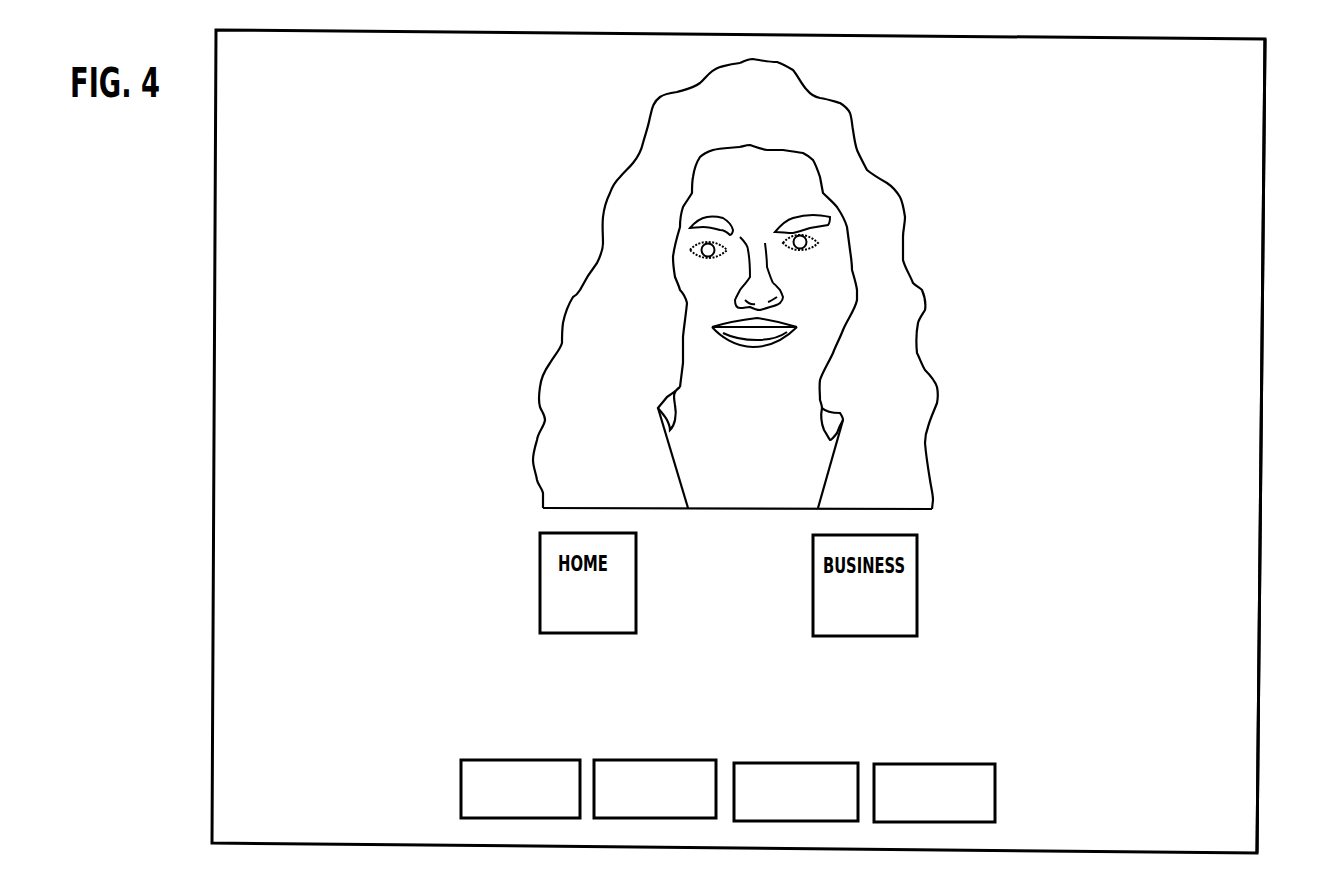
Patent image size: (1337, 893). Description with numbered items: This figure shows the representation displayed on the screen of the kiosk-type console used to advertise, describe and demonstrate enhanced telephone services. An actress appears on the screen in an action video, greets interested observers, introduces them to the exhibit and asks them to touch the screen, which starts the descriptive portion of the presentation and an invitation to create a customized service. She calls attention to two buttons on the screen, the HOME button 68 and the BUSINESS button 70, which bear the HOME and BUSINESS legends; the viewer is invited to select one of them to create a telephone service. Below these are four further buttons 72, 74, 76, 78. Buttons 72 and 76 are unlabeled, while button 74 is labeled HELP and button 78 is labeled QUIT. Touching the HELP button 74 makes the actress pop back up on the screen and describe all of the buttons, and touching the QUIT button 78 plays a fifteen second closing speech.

The HOME button 68 is at (232, 542).
The BUSINESS button 70 is at (1252, 561).
The unlabeled button 72 is at (537, 808).
The HELP button 74 is at (668, 811).
The unlabeled button 76 is at (795, 815).
The QUIT button 78 is at (930, 815).